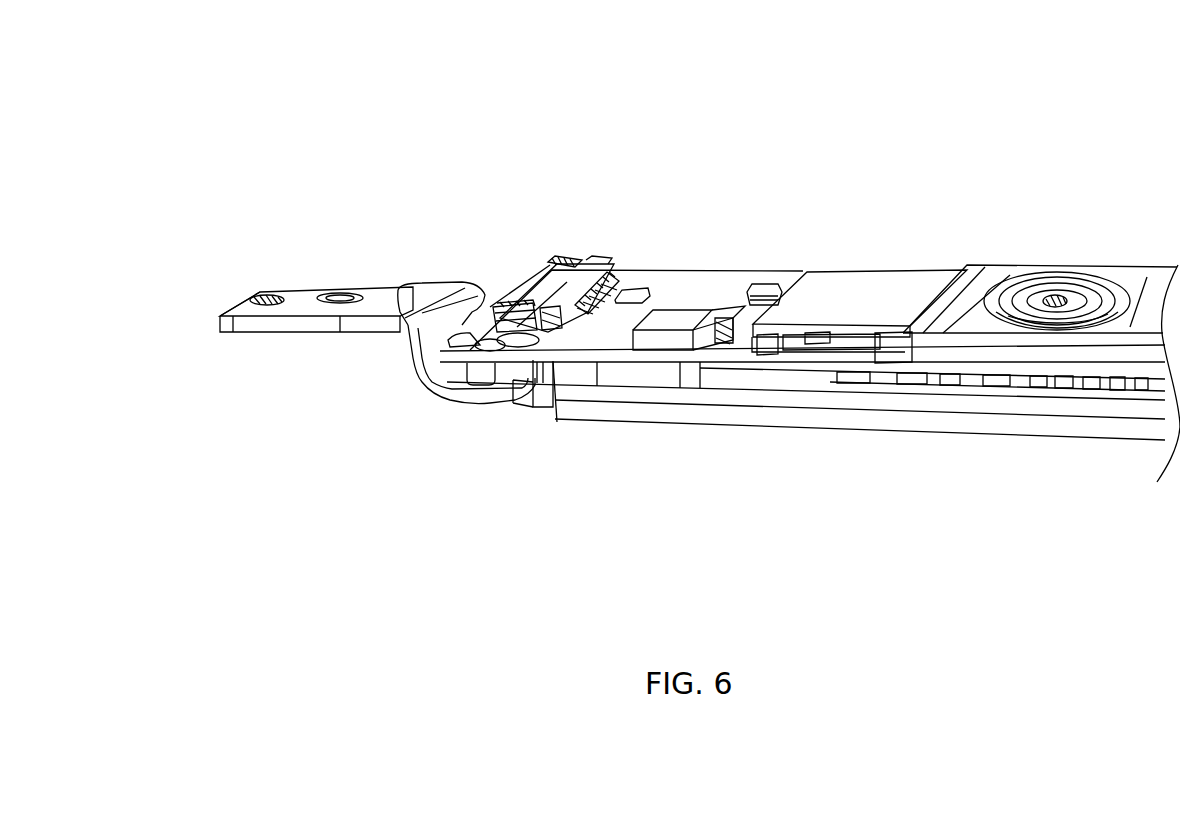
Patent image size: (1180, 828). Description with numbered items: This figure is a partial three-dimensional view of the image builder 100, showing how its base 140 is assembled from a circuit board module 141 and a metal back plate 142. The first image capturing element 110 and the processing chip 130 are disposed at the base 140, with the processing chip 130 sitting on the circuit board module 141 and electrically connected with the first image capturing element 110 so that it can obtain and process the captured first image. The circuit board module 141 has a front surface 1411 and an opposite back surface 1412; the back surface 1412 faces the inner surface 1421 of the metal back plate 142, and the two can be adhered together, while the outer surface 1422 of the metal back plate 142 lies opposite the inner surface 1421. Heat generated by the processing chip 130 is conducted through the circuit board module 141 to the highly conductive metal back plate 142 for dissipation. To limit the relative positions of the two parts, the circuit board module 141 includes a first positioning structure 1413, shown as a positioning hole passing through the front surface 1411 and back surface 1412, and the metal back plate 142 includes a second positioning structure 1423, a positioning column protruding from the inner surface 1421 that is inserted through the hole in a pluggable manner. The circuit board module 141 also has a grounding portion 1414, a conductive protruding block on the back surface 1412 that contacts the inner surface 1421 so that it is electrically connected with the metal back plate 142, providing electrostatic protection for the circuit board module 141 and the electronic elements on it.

The image builder 100 is at (228, 71).
The base 140 is at (434, 133).
The metal back plate 142 is at (298, 301).
The circuit board module 141 is at (534, 287).
The front surface 1411 is at (672, 287).
The back surface 1412 is at (682, 365).
The first positioning structure 1413 is at (462, 339).
The grounding portion 1414 is at (537, 370).
The inner surface 1421 is at (743, 383).
The outer surface 1422 is at (800, 428).
The second positioning structure 1423 is at (472, 365).
The processing chip 130 is at (863, 288).
The first image capturing element 110 is at (1070, 295).